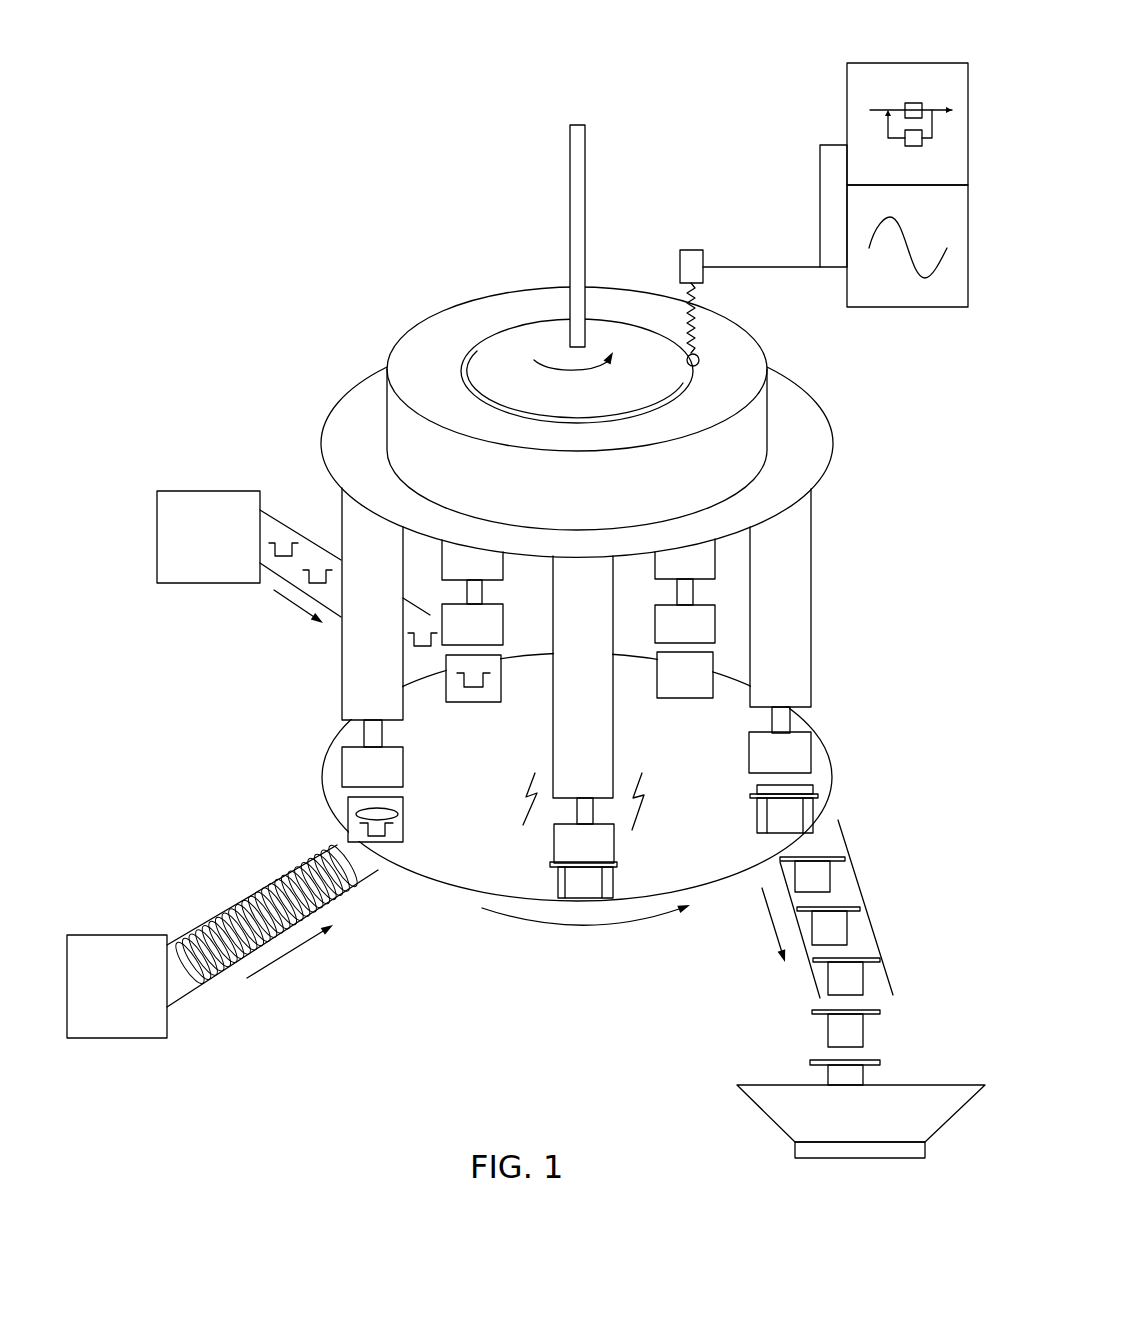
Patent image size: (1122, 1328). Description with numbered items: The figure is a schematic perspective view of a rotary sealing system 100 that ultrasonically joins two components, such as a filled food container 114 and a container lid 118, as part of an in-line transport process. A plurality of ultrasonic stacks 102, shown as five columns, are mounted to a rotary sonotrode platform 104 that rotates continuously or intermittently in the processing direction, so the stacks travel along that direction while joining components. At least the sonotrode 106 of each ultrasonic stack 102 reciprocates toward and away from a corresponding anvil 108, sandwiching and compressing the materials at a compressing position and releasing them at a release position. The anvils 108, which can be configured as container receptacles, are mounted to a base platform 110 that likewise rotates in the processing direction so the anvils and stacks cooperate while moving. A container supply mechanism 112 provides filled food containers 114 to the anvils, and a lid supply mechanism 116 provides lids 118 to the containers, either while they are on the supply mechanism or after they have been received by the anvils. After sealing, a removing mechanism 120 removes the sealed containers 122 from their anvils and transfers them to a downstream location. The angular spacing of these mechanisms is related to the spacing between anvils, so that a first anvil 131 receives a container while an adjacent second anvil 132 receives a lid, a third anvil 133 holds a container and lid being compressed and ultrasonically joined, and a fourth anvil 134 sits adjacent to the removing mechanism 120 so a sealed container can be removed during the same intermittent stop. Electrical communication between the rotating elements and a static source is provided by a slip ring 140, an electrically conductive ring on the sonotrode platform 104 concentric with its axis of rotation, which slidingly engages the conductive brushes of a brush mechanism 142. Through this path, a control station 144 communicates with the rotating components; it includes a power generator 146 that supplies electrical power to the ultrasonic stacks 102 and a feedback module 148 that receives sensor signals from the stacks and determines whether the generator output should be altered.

The rotary sealing system 100 is at (432, 128).
The ultrasonic stacks 102 is at (838, 610).
The rotary sonotrode platform 104 is at (375, 387).
The sonotrode 106 is at (795, 750).
The anvils 108 is at (807, 818).
The base platform 110 is at (803, 718).
The container supply mechanism 112 is at (275, 517).
The filled food container 114 is at (294, 540).
The lid supply mechanism 116 is at (188, 935).
The container lids 118 is at (302, 867).
The removing mechanism 120 is at (808, 975).
The sealed containers 122 is at (825, 872).
The first anvil 131 is at (493, 695).
The second anvil 132 is at (348, 800).
The third anvil 133 is at (555, 875).
The fourth anvil 134 is at (760, 813).
The slip ring 140 is at (507, 325).
The brush mechanism 142 is at (683, 267).
The control station 144 is at (791, 144).
The power generator 146 is at (938, 298).
The feedback module 148 is at (857, 90).